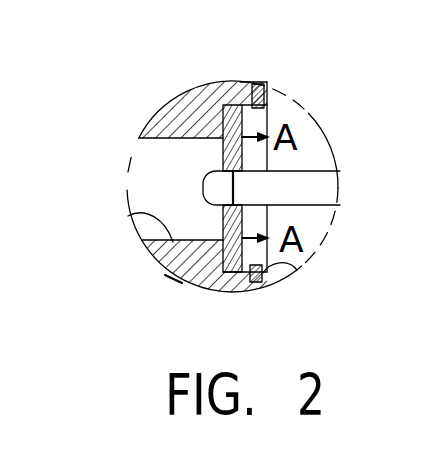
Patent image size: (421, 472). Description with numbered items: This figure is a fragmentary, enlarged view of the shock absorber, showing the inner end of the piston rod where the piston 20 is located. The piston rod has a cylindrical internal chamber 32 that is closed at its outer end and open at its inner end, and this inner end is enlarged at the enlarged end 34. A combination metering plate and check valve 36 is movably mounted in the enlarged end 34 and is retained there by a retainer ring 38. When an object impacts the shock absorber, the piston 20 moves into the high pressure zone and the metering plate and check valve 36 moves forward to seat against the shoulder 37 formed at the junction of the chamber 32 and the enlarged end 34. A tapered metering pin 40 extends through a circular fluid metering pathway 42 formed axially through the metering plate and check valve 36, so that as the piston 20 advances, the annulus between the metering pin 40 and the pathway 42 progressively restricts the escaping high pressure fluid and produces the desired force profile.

The piston 20 is at (170, 278).
The cylindrical internal chamber 32 is at (128, 216).
The enlarged end 34 is at (297, 270).
The metering plate and check valve 36 is at (214, 85).
The shoulder 37 is at (217, 280).
The retainer ring 38 is at (248, 82).
The metering pin 40 is at (315, 186).
The fluid metering pathway 42 is at (223, 168).